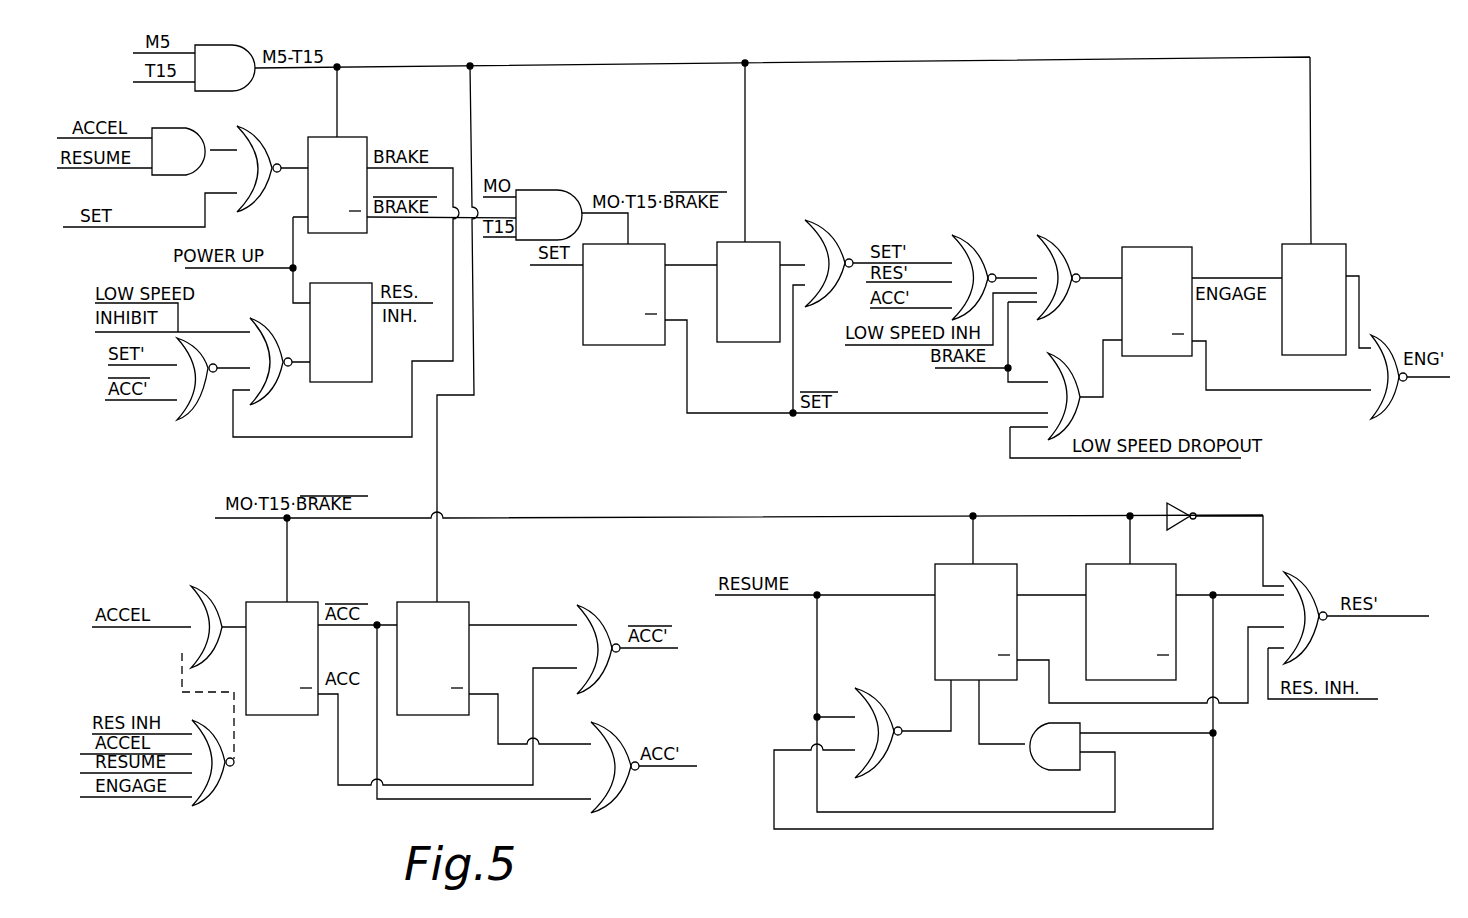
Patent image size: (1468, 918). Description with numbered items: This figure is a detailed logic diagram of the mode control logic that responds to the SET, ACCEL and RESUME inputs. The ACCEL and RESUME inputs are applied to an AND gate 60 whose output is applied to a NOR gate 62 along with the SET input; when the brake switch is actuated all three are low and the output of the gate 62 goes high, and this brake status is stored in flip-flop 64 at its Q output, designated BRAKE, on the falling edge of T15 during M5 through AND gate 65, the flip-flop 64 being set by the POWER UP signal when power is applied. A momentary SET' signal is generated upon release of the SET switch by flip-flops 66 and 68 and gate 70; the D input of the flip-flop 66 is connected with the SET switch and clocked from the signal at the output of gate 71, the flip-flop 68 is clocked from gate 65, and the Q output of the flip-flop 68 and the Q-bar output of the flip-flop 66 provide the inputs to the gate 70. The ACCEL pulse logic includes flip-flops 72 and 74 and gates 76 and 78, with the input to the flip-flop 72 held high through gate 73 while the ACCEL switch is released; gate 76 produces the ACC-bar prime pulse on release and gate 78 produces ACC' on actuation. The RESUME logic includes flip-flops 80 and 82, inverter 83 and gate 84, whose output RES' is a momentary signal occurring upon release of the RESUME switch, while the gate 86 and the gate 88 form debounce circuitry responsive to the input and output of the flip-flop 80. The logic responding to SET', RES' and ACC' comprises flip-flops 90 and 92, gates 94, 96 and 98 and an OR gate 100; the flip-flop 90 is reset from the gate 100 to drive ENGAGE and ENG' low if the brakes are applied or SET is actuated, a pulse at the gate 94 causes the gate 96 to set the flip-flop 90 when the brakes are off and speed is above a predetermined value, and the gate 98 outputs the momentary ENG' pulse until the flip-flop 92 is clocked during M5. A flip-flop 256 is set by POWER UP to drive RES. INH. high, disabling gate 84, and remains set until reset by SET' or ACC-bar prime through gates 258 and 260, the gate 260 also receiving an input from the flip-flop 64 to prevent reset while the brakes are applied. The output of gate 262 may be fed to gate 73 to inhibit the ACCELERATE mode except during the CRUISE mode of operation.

The AND gate 60 is at (195, 113).
The NOR gate 62 is at (265, 127).
The flip-flop 64 is at (352, 137).
The AND gate 65 is at (238, 91).
The flip-flop 66 is at (614, 345).
The flip-flop 68 is at (738, 342).
The gate 70 is at (828, 222).
The gate 71 is at (556, 190).
The flip-flop 72 is at (296, 602).
The gate 73 is at (203, 588).
The flip-flop 74 is at (449, 602).
The gate 76 is at (604, 608).
The gate 78 is at (621, 732).
The flip-flop 80 is at (997, 564).
The flip-flop 82 is at (1165, 564).
The inverter 83 is at (1178, 503).
The gate 84 is at (1320, 558).
The gate 86 is at (1026, 756).
The gate 88 is at (882, 712).
The flip-flop 90 is at (1140, 247).
The flip-flop 92 is at (1336, 244).
The gate 94 is at (985, 218).
The gate 96 is at (1050, 238).
The gate 98 is at (1383, 337).
The OR gate 100 is at (1078, 340).
The flip-flop 256 is at (338, 382).
The gate 258 is at (200, 418).
The gate 260 is at (280, 395).
The gate 262 is at (226, 790).